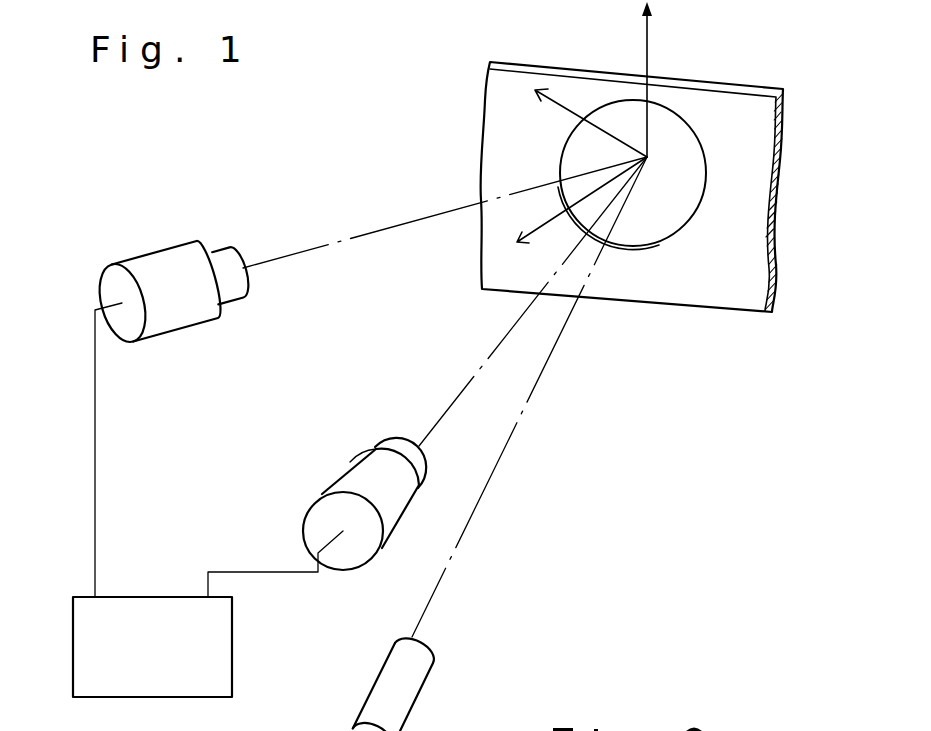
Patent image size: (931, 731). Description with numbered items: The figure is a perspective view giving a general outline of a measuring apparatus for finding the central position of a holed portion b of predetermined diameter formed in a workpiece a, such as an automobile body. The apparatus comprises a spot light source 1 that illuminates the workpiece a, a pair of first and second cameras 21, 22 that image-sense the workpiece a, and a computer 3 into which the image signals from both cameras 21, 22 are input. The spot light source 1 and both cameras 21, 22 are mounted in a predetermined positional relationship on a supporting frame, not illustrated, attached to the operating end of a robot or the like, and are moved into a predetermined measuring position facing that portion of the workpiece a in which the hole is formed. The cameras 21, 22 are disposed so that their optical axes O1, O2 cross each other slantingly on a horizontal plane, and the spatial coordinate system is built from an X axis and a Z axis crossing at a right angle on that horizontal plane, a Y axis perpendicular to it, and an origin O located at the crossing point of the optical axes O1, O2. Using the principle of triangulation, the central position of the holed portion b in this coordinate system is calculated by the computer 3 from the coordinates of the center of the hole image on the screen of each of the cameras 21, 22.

The spot light source 1 is at (420, 672).
The first camera 21 is at (398, 520).
The second camera 22 is at (165, 257).
The computer 3 is at (232, 643).
The workpiece a is at (722, 100).
The holed portion b is at (640, 248).
The origin O is at (650, 155).
The optical axis of the first camera O1 is at (447, 398).
The optical axis of the second camera O2 is at (402, 222).